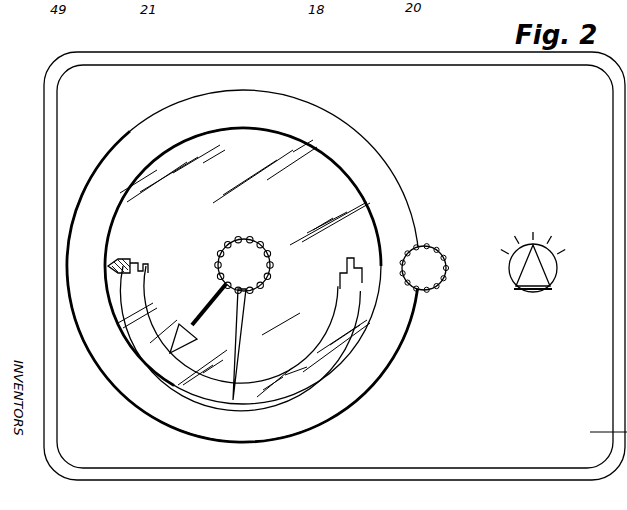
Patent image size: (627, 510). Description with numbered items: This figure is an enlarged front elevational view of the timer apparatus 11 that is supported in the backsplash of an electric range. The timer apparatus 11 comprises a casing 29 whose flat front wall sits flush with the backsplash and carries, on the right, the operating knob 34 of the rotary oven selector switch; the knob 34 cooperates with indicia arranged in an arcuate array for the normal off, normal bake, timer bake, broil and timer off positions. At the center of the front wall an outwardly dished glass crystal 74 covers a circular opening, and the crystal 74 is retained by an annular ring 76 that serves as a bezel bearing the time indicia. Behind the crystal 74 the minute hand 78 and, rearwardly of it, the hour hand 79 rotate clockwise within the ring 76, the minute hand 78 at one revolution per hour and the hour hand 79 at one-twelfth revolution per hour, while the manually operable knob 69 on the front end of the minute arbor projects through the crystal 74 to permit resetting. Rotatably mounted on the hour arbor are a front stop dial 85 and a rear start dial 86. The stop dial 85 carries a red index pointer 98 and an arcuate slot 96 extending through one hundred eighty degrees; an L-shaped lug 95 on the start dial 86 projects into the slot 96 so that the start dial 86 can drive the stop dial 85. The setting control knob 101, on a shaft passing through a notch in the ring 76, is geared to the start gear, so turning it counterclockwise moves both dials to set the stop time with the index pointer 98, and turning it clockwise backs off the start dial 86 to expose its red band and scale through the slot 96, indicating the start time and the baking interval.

The timer apparatus 11 is at (456, 108).
The casing 29 is at (42, 125).
The crystal 74 is at (233, 259).
The annular ring 76 is at (356, 392).
The manually operable knob 69 is at (247, 238).
The hour hand 79 is at (206, 311).
The minute hand 78 is at (243, 326).
The index pointer 98 is at (111, 262).
The L-shaped lug 95 is at (146, 268).
The arcuate slot 96 is at (342, 286).
The stop dial 85 is at (135, 341).
The start dial 86 is at (195, 369).
The setting control knob 101 is at (429, 252).
The operating knob 34 is at (550, 280).